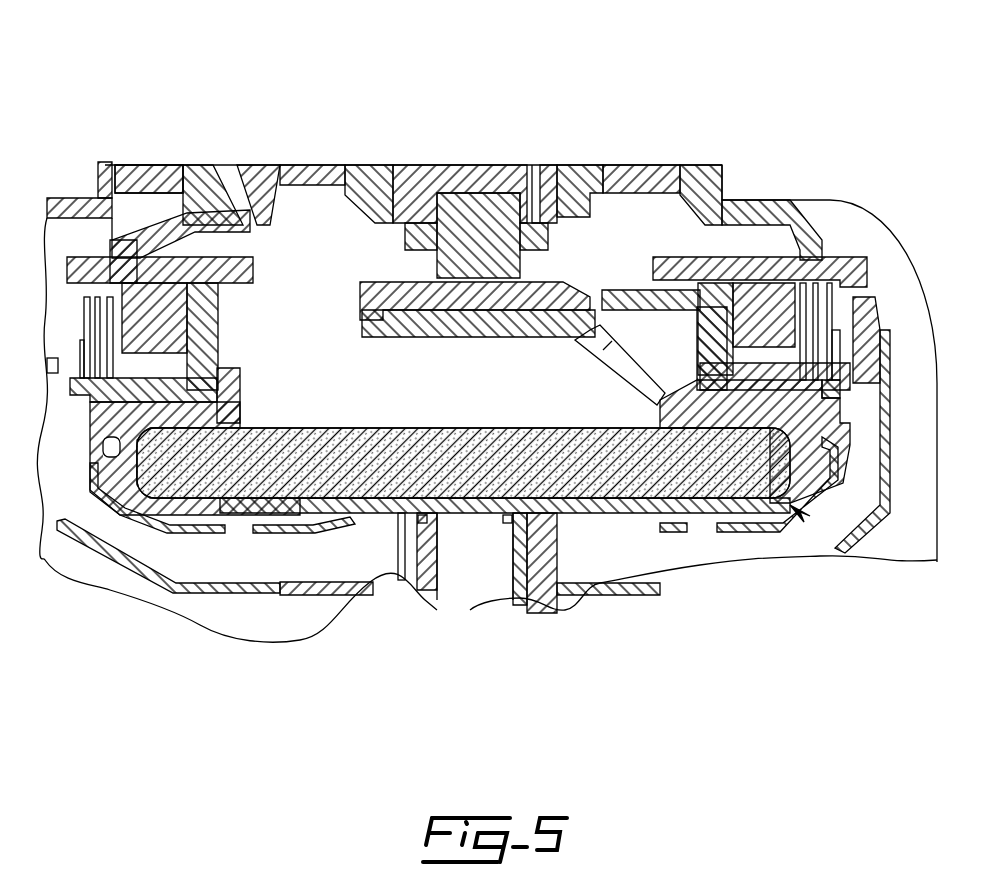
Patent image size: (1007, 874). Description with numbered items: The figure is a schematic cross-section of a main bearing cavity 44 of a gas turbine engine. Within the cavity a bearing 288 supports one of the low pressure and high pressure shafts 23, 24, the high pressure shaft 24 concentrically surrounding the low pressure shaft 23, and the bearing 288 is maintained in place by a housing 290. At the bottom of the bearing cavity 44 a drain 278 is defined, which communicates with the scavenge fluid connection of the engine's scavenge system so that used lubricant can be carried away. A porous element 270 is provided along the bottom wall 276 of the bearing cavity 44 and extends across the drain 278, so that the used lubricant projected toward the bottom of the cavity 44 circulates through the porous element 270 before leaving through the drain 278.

The low pressure shaft 23 is at (276, 175).
The high pressure shaft 24 is at (253, 98).
The main bearing cavity 44 is at (293, 290).
The bearing 288 is at (492, 225).
The porous element 270 is at (225, 480).
The drain 278 is at (477, 550).
The bottom wall 276 is at (662, 505).
The housing 290 is at (802, 518).